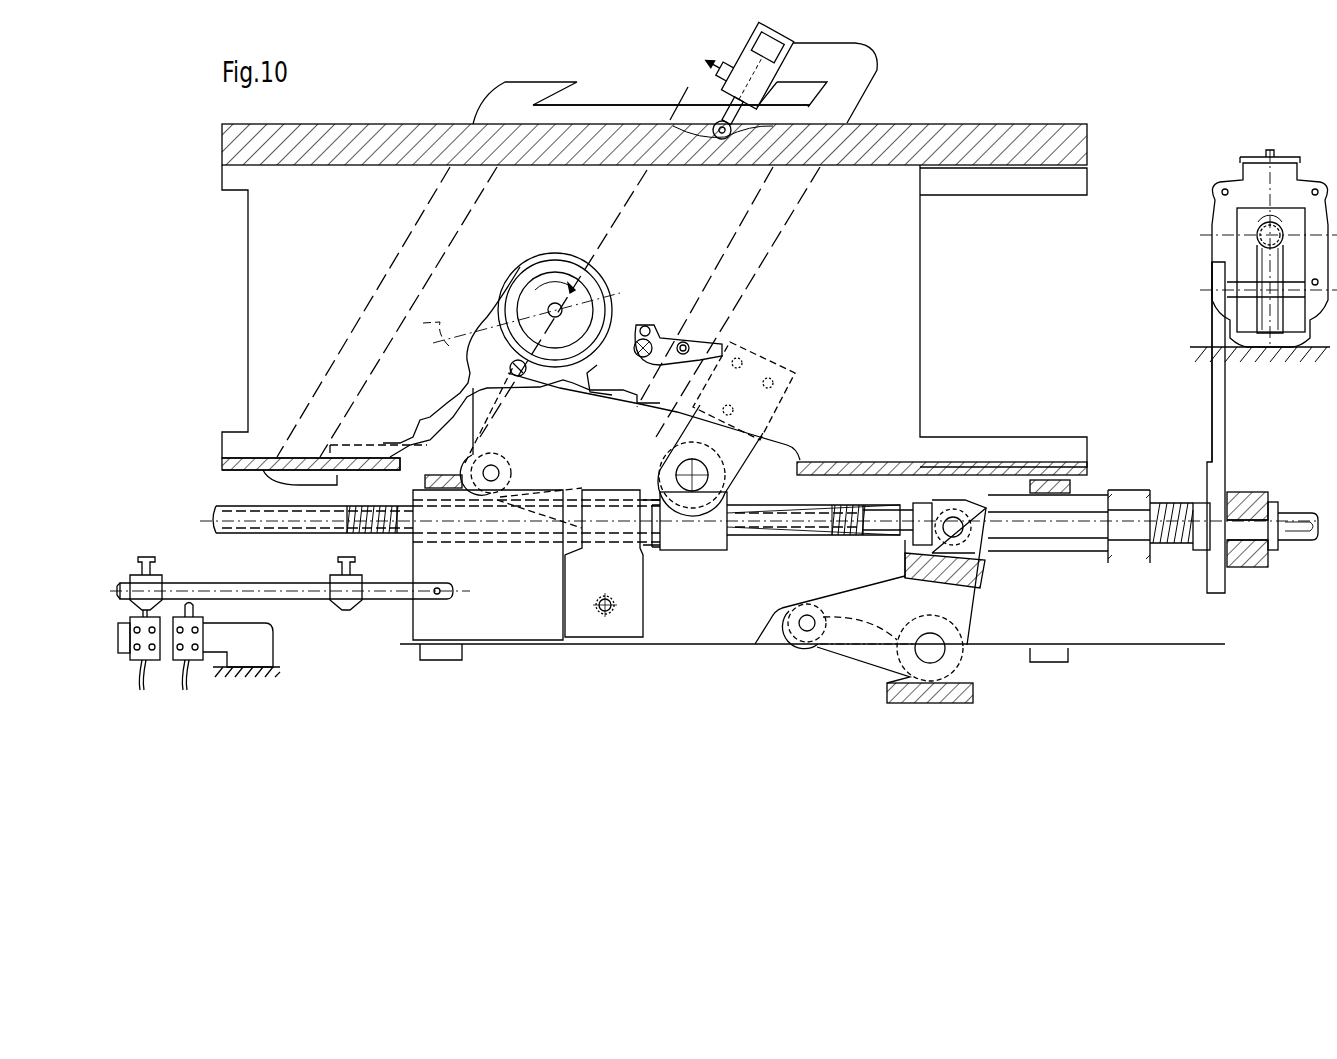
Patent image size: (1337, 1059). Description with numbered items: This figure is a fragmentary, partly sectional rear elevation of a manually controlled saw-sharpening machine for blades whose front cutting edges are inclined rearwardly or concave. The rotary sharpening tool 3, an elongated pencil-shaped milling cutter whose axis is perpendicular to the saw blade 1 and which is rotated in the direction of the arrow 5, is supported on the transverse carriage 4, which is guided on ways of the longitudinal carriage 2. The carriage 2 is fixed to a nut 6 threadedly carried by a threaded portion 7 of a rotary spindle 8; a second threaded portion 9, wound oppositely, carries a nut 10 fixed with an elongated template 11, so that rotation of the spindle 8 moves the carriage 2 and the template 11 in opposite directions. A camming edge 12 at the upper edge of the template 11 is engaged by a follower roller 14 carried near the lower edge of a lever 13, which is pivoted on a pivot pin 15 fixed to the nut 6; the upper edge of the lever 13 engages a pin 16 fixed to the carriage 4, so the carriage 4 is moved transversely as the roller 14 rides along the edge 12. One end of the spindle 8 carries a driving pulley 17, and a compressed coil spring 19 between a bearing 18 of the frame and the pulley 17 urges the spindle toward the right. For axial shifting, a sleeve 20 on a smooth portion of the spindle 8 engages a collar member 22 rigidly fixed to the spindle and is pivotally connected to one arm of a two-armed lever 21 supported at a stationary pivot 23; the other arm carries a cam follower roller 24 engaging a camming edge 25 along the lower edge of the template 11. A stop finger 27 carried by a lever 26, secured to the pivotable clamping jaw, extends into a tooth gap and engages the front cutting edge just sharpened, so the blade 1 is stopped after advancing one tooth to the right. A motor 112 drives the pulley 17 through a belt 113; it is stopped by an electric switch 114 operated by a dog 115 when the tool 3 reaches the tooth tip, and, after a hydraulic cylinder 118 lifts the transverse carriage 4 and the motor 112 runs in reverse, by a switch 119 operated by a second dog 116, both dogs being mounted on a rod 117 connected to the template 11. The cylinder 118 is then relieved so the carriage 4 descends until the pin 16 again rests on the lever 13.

The saw blade 1 is at (450, 358).
The longitudinal carriage 2 is at (328, 190).
The rotary sharpening tool 3 is at (565, 312).
The transverse carriage 4 is at (621, 120).
The arrow 5 is at (560, 290).
The nut 6 is at (677, 543).
The threaded portion 7 is at (762, 527).
The rotary spindle 8 is at (292, 520).
The second threaded portion 9 is at (342, 603).
The nut 10 is at (605, 612).
The template 11 is at (1097, 620).
The camming edge 12 is at (496, 480).
The lever 13 is at (518, 457).
The follower roller 14 is at (503, 478).
The pivot pin 15 is at (692, 478).
The pin 16 is at (514, 364).
The driving pulley 17 is at (1208, 570).
The bearing 18 is at (1123, 503).
The compressed coil spring 19 is at (1173, 512).
The sleeve 20 is at (955, 520).
The two-armed lever 21 is at (968, 602).
The collar member 22 is at (920, 518).
The pivot 23 is at (932, 650).
The cam follower roller 24 is at (815, 636).
The camming edge 25 is at (777, 617).
The lever 26 is at (697, 353).
The stop finger 27 is at (650, 330).
The motor 112 is at (1237, 200).
The belt 113 is at (1220, 420).
The electric switch 114 is at (190, 652).
The dog 115 is at (275, 537).
The dog 116 is at (145, 590).
The rod 117 is at (190, 588).
The hydraulic cylinder 118 is at (775, 38).
The switch 119 is at (143, 652).